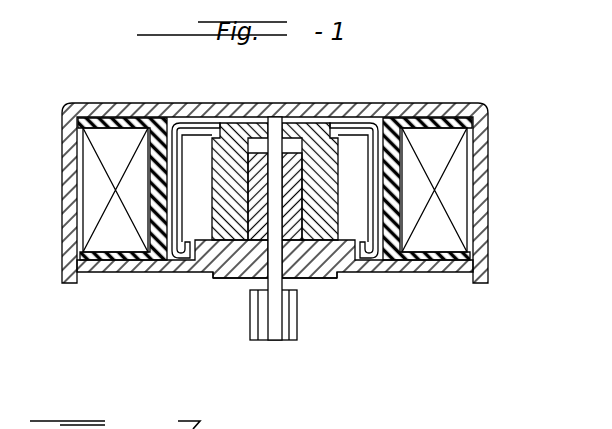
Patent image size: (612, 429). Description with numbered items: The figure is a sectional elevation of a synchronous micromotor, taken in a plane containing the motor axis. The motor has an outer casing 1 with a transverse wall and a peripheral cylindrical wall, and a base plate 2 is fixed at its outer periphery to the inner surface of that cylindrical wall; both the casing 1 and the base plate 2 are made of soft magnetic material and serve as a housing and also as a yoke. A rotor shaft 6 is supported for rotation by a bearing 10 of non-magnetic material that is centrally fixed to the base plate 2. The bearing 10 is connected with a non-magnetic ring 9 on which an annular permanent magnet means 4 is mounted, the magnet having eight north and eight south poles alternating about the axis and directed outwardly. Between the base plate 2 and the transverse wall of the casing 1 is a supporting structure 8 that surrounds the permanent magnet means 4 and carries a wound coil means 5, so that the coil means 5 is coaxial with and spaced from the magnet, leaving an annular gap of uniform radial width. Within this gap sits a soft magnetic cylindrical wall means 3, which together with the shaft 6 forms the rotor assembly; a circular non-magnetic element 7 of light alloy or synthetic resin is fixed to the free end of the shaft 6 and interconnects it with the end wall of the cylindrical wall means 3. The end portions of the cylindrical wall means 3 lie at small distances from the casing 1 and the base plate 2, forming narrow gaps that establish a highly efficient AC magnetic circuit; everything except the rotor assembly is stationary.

The outer casing 1 is at (479, 148).
The base plate 2 is at (410, 268).
The cylindrical wall means 3 is at (176, 122).
The permanent magnet means 4 is at (352, 155).
The coil means 5 is at (93, 190).
The rotor shaft 6 is at (277, 128).
The non-magnetic element 7 is at (255, 124).
The supporting structure 8 is at (405, 150).
The non-magnetic ring 9 is at (314, 152).
The bearing 10 is at (300, 273).